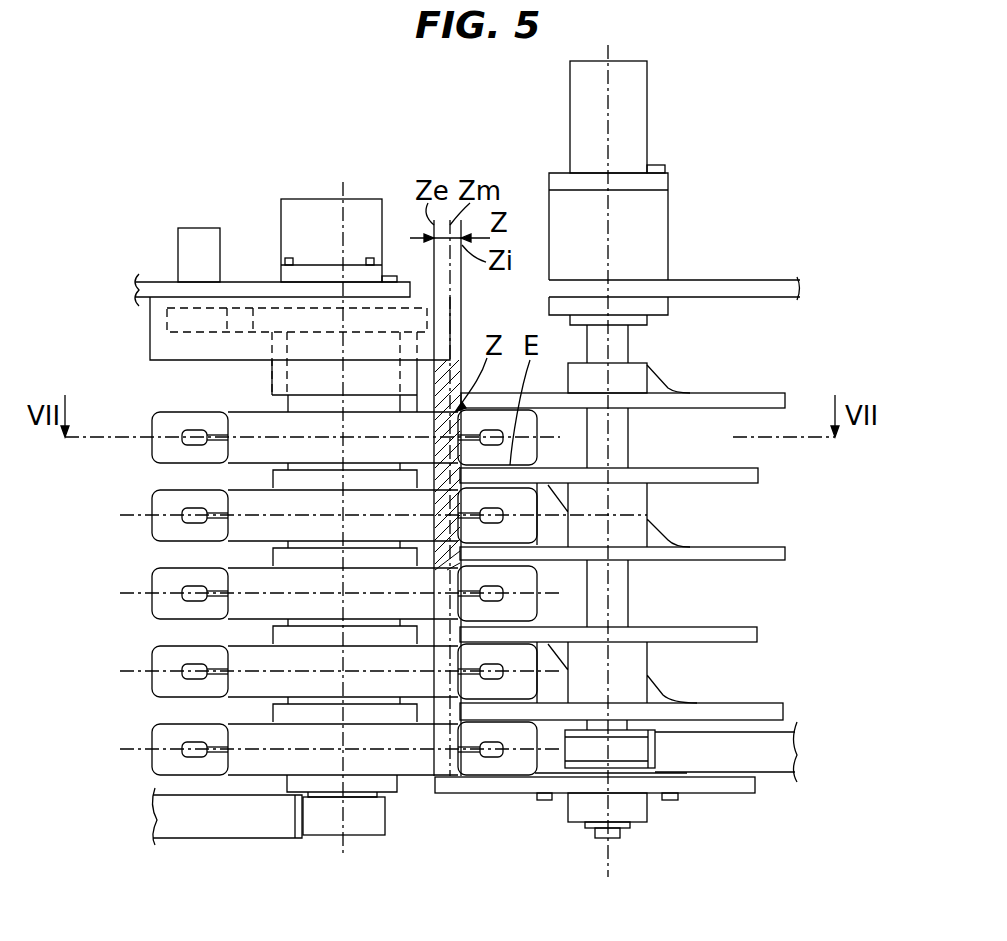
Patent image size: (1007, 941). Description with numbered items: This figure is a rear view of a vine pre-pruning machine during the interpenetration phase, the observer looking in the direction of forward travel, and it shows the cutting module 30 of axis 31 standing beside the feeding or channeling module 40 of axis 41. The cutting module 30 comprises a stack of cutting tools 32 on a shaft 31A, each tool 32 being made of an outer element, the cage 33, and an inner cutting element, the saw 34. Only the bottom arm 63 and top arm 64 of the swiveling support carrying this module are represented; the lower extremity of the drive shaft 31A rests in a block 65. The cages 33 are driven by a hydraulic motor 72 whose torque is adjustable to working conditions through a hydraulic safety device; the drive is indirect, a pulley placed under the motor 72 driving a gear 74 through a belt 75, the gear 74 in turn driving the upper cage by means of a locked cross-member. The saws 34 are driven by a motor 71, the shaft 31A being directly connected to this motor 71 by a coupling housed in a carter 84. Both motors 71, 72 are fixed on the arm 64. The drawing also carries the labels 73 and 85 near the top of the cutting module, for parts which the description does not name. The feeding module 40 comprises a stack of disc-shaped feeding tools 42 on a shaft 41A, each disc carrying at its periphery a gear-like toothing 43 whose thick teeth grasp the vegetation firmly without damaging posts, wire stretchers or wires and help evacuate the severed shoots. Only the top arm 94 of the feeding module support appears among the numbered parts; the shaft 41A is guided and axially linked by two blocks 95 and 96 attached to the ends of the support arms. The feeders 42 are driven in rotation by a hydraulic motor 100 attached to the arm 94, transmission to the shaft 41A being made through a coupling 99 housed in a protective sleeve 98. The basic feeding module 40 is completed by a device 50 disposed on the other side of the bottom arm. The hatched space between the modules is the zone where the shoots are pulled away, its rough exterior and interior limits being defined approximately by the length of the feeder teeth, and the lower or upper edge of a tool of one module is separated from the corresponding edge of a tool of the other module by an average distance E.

The cutting module 30 is at (150, 542).
The axis of the cutting module 31 is at (345, 192).
The shaft 31A is at (365, 797).
The cutting tool 32 is at (150, 611).
The cage 33 is at (160, 452).
The saw 34 is at (188, 672).
The feeding module 40 is at (774, 618).
The axis of the feeding module 41 is at (612, 47).
The shaft 41A is at (615, 603).
The feeding tool 42 is at (760, 548).
The peripheral toothing 43 is at (790, 733).
The device 50 is at (768, 795).
The bottom arm 63 is at (168, 818).
The top arm 64 is at (133, 291).
The block 65 is at (318, 822).
The motor 71 is at (300, 218).
The hydraulic motor 72 is at (195, 240).
The guide 73 is at (182, 315).
The gear 74 is at (240, 312).
The belt 75 is at (180, 312).
The carter 84 is at (160, 345).
The sleeve 85 is at (282, 373).
The top arm 94 is at (777, 297).
The block 95 is at (620, 752).
The block 96 is at (653, 270).
The protective sleeve 98 is at (668, 200).
The coupling 99 is at (630, 233).
The hydraulic motor 100 is at (633, 120).